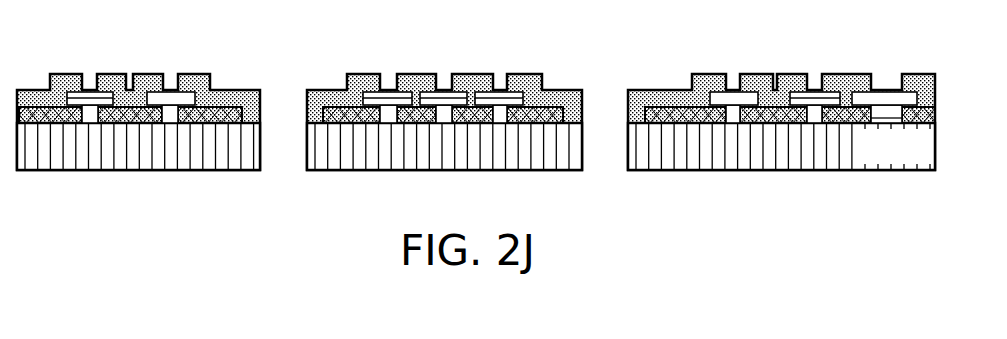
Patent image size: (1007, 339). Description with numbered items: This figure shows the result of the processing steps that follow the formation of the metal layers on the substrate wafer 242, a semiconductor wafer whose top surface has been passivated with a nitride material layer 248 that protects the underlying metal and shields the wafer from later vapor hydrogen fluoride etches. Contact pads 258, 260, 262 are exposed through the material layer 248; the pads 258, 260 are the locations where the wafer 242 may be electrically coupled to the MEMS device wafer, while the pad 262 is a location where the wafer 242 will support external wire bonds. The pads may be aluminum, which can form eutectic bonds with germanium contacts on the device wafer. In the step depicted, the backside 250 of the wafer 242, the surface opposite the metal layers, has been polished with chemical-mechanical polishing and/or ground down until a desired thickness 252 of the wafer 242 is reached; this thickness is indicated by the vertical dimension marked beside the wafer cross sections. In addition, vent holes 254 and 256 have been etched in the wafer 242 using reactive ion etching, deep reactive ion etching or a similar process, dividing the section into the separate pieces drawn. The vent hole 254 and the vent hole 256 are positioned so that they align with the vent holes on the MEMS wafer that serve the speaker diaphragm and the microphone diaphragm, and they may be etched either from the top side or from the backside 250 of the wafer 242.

The substrate wafer 242 is at (905, 156).
The nitride material layer 248 is at (781, 122).
The backside 250 is at (781, 143).
The desired thickness 252 is at (597, 171).
The vent hole 254 is at (189, 143).
The vent hole 256 is at (610, 172).
The contact pad 258 is at (171, 99).
The contact pad 260 is at (734, 99).
The contact pad 262 is at (884, 99).